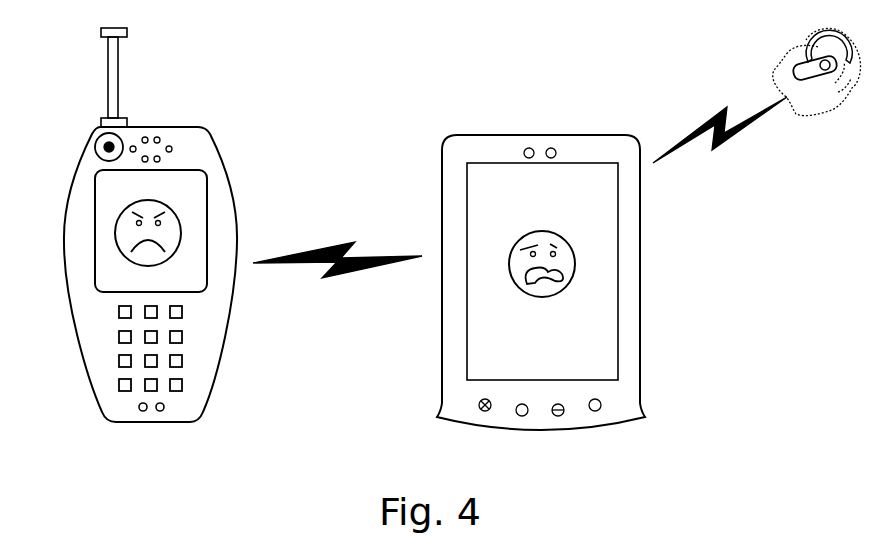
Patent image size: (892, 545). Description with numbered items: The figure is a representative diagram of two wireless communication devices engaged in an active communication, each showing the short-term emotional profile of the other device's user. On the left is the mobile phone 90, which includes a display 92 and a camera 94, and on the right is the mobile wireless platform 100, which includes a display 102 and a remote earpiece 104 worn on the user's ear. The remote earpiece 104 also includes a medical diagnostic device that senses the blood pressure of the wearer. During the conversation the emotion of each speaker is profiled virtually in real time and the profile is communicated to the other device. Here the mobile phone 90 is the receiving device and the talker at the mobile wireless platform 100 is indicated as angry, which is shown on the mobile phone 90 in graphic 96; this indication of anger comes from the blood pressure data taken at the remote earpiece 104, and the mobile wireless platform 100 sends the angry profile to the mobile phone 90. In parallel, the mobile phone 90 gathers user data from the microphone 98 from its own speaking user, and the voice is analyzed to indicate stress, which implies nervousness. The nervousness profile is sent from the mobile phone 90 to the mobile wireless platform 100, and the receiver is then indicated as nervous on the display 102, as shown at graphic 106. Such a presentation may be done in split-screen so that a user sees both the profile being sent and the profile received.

The mobile phone 90 is at (233, 330).
The display 92 is at (206, 187).
The camera 94 is at (92, 146).
The graphic 96 is at (188, 174).
The microphone 98 is at (178, 404).
The mobile wireless platform 100 is at (640, 245).
The display 102 is at (618, 187).
The remote earpiece 104 is at (800, 32).
The graphic 106 is at (602, 320).